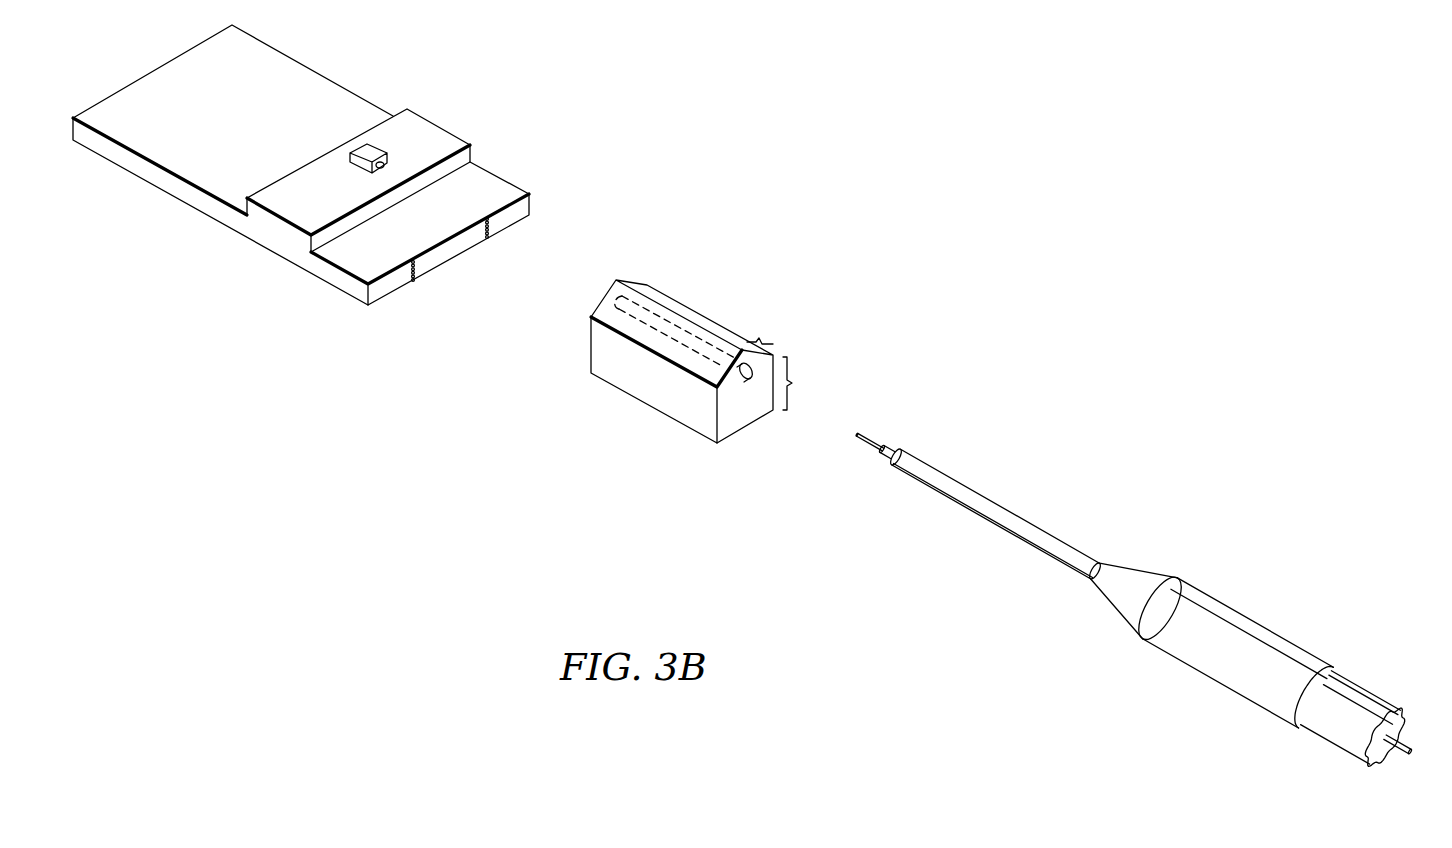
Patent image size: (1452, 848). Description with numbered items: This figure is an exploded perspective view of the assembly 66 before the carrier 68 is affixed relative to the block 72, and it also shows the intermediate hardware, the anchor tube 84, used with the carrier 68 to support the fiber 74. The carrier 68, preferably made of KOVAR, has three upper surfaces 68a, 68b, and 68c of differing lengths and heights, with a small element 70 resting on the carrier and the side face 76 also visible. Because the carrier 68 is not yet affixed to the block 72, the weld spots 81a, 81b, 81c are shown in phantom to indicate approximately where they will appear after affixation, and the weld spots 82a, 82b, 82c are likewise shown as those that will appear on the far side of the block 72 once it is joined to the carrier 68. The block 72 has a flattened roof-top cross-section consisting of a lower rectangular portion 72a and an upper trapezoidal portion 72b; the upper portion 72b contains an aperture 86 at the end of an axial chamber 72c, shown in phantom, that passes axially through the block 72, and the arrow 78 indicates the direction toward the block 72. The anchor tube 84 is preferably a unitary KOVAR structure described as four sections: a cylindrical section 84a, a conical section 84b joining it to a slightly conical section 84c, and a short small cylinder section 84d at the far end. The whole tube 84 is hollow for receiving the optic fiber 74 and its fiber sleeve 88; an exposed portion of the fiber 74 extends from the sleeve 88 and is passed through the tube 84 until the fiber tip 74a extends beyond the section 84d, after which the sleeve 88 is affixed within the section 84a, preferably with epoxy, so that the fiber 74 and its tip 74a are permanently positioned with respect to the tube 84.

The assembly 66 is at (881, 253).
The carrier 68 is at (326, 178).
The upper surface 68a is at (262, 134).
The upper surface 68b is at (432, 134).
The upper surface 68c is at (358, 264).
The optoelectronic device chip 70 is at (359, 166).
The block 72 is at (718, 355).
The lower rectangular portion 72a is at (814, 383).
The upper trapezoidal portion 72b is at (768, 326).
The axial chamber 72c is at (648, 316).
The optic fiber 74 is at (1406, 742).
The fiber tip 74a is at (857, 433).
The side face of substrate ledge 76 is at (524, 205).
The holder block assembly direction 78 is at (683, 355).
The weld spot 81a is at (413, 259).
The weld spot 81b is at (418, 276).
The weld spot 81c is at (416, 283).
The weld spot 82a is at (489, 241).
The weld spot 82b is at (491, 232).
The weld spot 82c is at (486, 217).
The anchor tube 84 is at (1140, 578).
The section 84a is at (1216, 668).
The section 84b is at (1138, 566).
The section 84c is at (990, 512).
The section 84d is at (884, 453).
The aperture 86 is at (753, 374).
The fiber sleeve 88 is at (1372, 691).